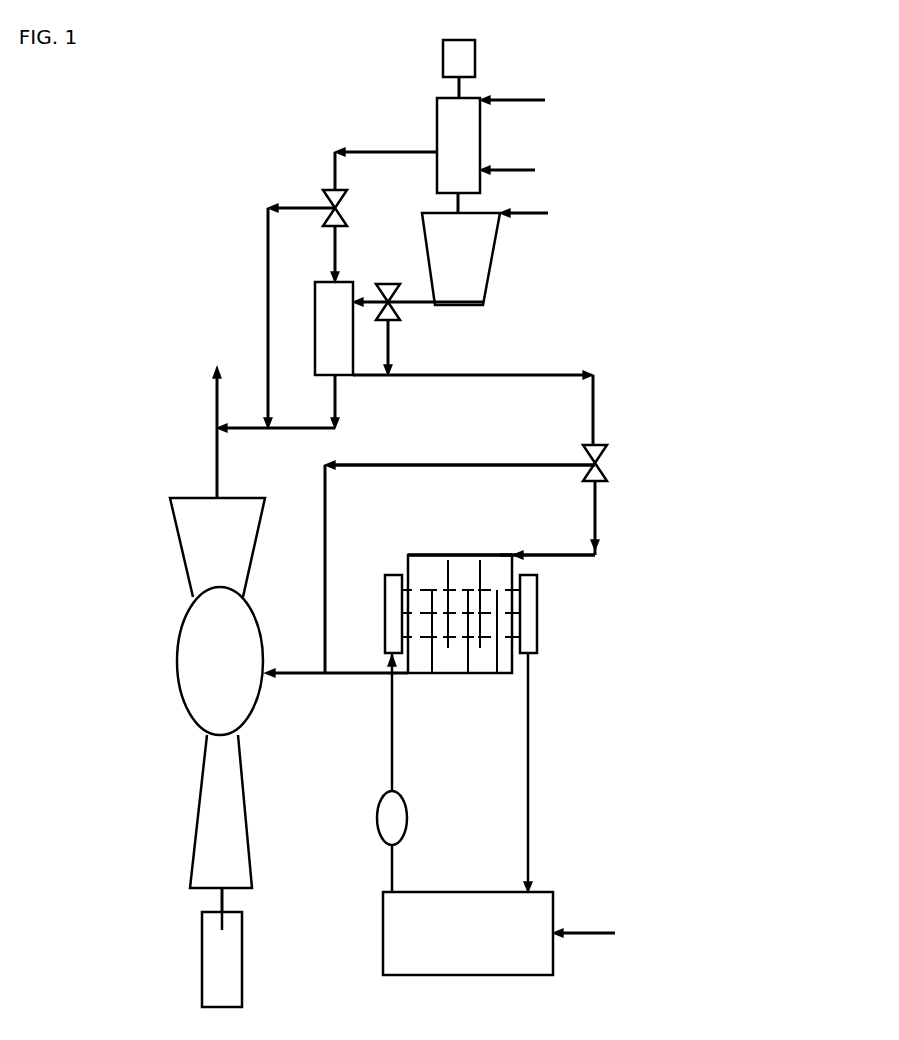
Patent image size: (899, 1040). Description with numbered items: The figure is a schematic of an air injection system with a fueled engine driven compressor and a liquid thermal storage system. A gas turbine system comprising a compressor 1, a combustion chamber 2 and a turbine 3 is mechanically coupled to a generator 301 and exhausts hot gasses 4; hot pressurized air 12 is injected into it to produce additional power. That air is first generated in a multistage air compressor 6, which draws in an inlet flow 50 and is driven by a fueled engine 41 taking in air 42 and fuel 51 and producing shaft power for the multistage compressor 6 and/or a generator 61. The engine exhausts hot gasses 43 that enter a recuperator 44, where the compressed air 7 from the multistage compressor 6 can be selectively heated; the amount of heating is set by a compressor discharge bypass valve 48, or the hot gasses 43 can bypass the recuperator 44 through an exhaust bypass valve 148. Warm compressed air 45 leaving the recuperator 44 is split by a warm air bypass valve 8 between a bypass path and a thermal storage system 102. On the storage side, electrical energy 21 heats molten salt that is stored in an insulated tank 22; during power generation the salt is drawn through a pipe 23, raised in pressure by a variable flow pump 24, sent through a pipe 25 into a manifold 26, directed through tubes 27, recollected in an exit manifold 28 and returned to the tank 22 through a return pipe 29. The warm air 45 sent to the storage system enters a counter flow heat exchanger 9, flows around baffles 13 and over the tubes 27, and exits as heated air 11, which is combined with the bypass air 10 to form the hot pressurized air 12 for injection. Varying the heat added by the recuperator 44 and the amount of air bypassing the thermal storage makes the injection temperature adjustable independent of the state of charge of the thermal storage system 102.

The compressor 1 is at (221, 823).
The combustion chamber 2 is at (220, 661).
The turbine 3 is at (217, 547).
The hot gasses 4 is at (268, 432).
The multistage air compressor 6 is at (461, 249).
The compressed air 7 is at (418, 290).
The warm air bypass valve 8 is at (602, 500).
The counter flow heat exchanger 9 is at (512, 558).
The air 10 is at (460, 551).
The air 11 is at (366, 687).
The hot pressurized air 12 is at (295, 661).
The baffles 13 is at (441, 660).
The electrical energy 21 is at (594, 935).
The insulated tank 22 is at (468, 933).
The pipe 23 is at (378, 868).
The pump 24 is at (405, 818).
The pipe 25 is at (380, 722).
The manifold 26 is at (380, 614).
The tubes 27 is at (440, 580).
The exit manifold 28 is at (541, 614).
The return pipe 29 is at (539, 772).
The fueled engine 41 is at (458, 145).
The air 42 is at (527, 101).
The hot exhaust gasses 43 is at (386, 155).
The recuperator 44 is at (334, 355).
The compressed air 45 is at (473, 393).
The compressor discharge bypass valve 48 is at (386, 312).
The feedstock supply line 50 is at (541, 215).
The fuel 51 is at (523, 171).
The generator 61 is at (459, 69).
The thermal storage system 102 is at (501, 548).
The exhaust bypass valve 148 is at (305, 298).
The generator 301 is at (215, 966).